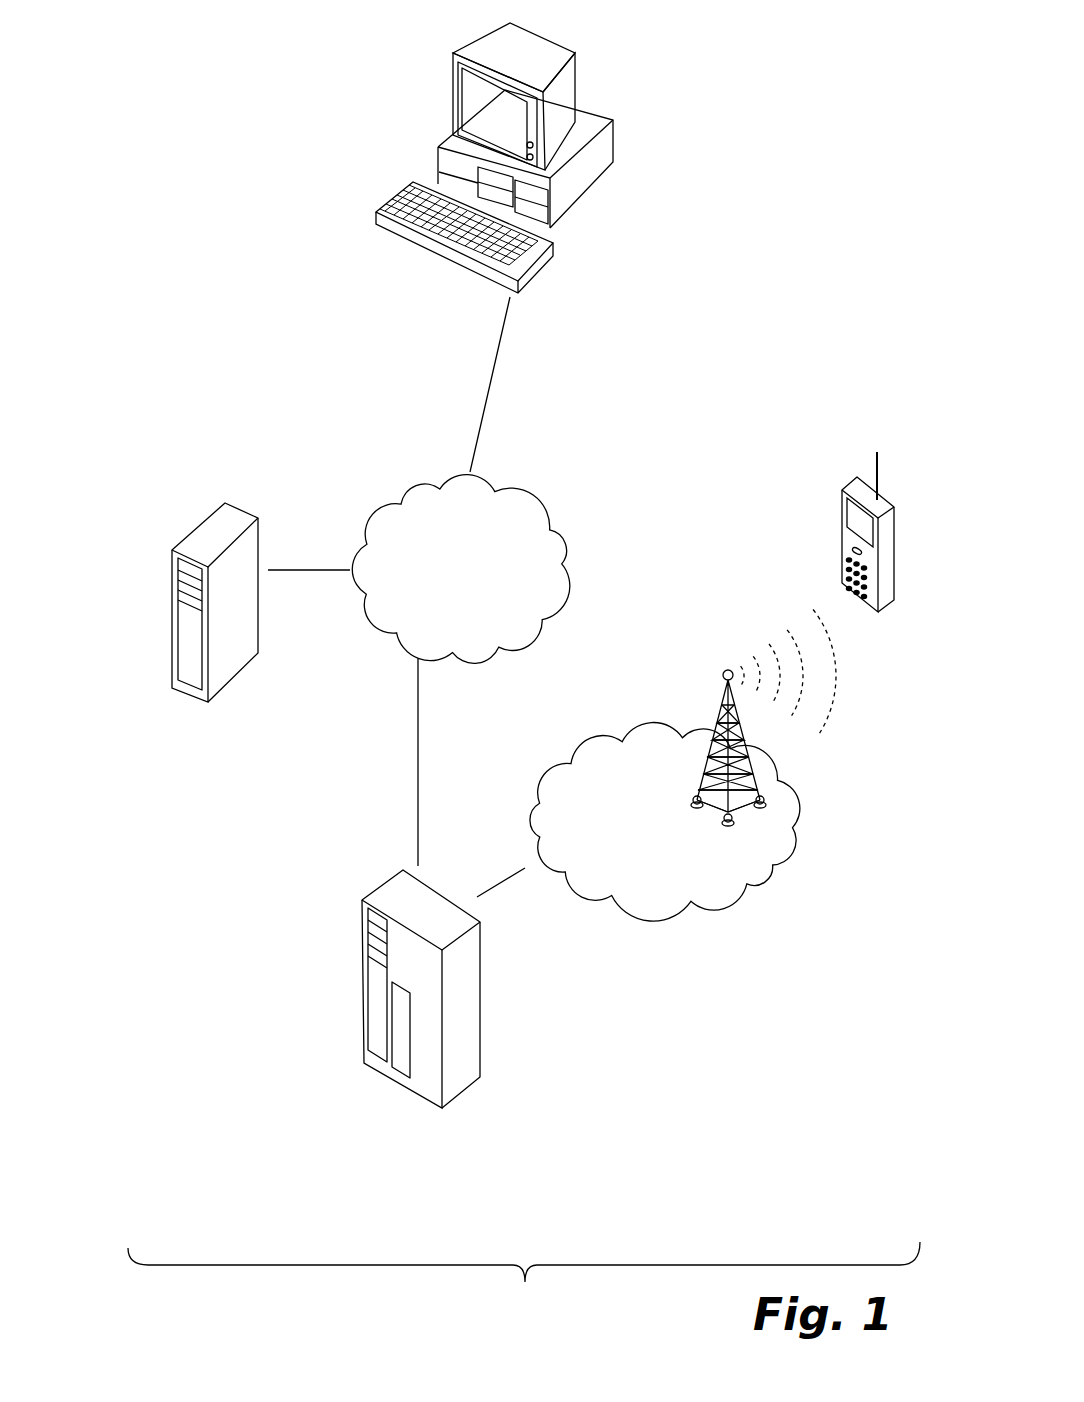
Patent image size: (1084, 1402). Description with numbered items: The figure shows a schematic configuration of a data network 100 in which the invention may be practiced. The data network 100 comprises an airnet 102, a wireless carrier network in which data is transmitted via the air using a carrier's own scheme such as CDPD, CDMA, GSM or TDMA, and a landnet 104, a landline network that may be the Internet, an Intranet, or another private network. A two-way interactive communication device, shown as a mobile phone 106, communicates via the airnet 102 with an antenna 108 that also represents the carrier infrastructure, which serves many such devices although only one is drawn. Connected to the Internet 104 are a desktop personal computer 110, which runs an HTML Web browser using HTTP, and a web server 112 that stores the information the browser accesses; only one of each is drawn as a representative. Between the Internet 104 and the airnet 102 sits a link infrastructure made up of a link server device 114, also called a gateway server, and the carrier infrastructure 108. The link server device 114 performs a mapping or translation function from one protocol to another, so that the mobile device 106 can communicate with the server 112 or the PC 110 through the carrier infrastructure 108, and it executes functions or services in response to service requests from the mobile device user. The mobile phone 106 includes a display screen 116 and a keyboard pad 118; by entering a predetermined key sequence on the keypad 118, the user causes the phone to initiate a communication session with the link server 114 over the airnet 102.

The data network 100 is at (524, 1277).
The airnet 102 is at (797, 835).
The landnet 104 is at (437, 490).
The two-way interactive communication device 106 is at (813, 536).
The antenna 108 is at (720, 690).
The desktop personal computer 110 is at (588, 190).
The server computer 112 is at (197, 530).
The link server device 114 is at (358, 996).
The display screen 116 is at (882, 506).
The keyboard pad 118 is at (857, 612).